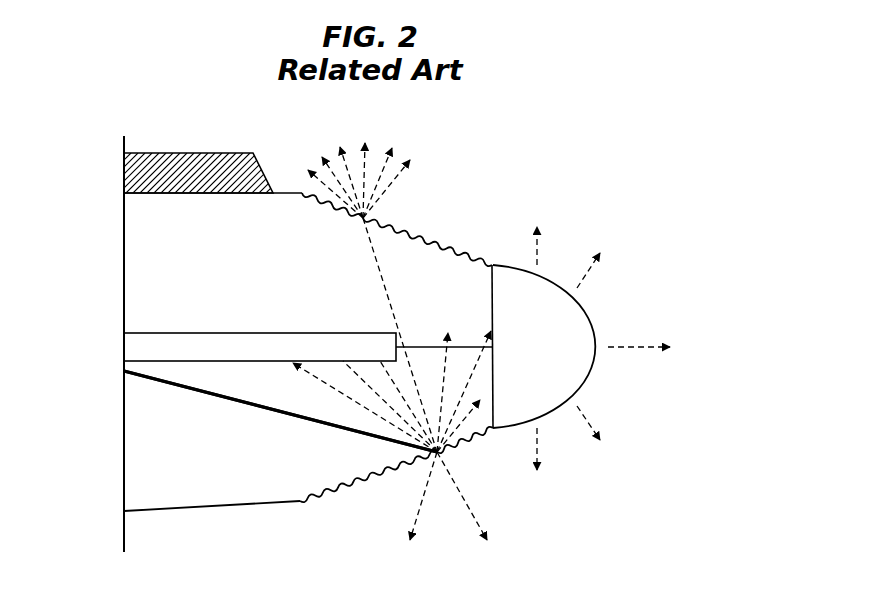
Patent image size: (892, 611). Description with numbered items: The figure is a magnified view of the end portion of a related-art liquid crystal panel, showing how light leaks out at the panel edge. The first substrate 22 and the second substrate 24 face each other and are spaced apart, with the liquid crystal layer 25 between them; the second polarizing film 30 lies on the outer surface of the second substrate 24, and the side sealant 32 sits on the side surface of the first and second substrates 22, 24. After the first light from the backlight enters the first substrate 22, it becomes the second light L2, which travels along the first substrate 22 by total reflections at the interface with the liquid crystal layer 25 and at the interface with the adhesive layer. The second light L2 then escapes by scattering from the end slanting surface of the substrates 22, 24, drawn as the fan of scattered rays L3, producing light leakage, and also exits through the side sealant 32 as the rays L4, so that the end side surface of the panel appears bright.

The first substrate 22 is at (137, 404).
The second substrate 24 is at (137, 256).
The liquid crystal layer 25 is at (137, 345).
The second polarizing film 30 is at (125, 173).
The side sealant 32 is at (600, 313).
The second light L2 is at (247, 403).
The scattered light L3 is at (397, 346).
The light emitted through lens L4 is at (597, 337).